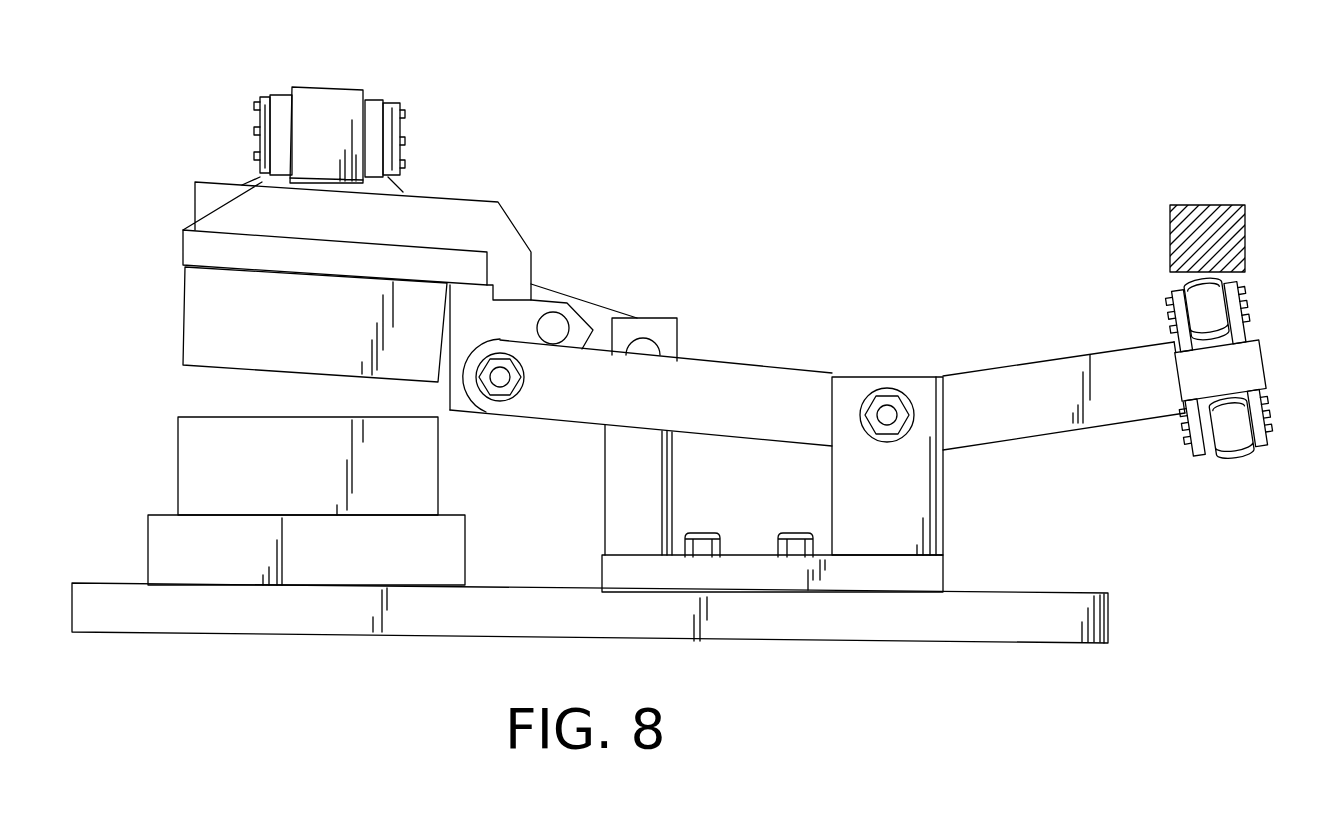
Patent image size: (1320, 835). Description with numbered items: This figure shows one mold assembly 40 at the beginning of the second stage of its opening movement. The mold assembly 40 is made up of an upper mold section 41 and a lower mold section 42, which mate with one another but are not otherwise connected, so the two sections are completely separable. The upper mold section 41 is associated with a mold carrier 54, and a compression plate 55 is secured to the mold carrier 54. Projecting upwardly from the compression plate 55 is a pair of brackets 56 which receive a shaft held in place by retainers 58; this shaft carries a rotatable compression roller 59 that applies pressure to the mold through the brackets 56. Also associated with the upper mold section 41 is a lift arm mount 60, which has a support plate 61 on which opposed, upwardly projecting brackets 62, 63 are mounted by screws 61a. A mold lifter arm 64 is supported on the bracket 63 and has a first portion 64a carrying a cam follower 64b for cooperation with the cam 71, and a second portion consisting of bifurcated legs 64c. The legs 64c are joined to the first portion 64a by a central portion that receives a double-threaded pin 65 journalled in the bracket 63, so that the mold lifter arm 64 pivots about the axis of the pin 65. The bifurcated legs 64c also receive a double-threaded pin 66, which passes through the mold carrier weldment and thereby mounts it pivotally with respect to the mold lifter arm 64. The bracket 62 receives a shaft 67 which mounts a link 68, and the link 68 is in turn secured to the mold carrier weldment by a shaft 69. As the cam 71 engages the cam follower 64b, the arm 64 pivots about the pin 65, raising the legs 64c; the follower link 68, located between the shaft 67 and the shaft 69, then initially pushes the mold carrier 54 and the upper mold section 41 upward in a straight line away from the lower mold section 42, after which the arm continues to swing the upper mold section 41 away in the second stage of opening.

The mold assembly 40 is at (150, 297).
The upper mold section 41 is at (237, 328).
The lower mold section 42 is at (223, 448).
The mold carrier 54 is at (465, 268).
The compression plate 55 is at (500, 236).
The bracket 56 is at (377, 161).
The retainer 58 is at (378, 112).
The compression roller 59 is at (328, 103).
The lift arm mount 60 is at (1108, 613).
The support plate 61 is at (947, 578).
The screw 61a is at (707, 532).
The bracket 62 is at (633, 515).
The bracket 63 is at (940, 511).
The mold lifter arm 64 is at (982, 352).
The first portion 64a is at (1053, 390).
The cam follower 64b is at (1248, 450).
The bifurcated leg 64c is at (750, 396).
The double-threaded pin 65 is at (887, 389).
The double-threaded pin 66 is at (493, 400).
The shaft 67 is at (657, 348).
The link 68 is at (602, 313).
The shaft 69 is at (560, 338).
The cam 71 is at (1235, 242).